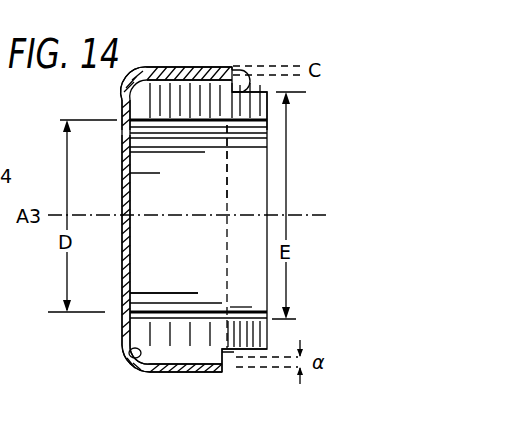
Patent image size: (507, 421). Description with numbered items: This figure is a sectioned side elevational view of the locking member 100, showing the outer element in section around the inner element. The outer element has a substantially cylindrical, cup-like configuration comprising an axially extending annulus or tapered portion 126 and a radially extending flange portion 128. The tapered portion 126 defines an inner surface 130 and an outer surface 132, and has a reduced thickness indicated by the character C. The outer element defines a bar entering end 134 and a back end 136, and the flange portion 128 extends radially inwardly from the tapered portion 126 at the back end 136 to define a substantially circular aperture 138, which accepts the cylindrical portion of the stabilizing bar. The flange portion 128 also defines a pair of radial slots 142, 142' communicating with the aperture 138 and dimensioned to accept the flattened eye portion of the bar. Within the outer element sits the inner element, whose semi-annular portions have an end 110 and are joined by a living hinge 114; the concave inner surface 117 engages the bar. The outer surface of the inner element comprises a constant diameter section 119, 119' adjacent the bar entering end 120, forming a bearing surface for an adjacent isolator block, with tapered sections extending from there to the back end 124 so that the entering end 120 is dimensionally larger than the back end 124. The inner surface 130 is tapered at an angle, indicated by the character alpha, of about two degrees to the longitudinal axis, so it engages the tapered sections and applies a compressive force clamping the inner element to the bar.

The locking member 100 is at (197, 37).
The end of first portion 110 is at (250, 112).
The living hinge 114 is at (192, 64).
The inner surface 117 is at (189, 267).
The constant diameter section 119 is at (283, 69).
The constant diameter section 119' is at (245, 373).
The bar entering end 120 is at (271, 335).
The back end 124 is at (138, 151).
The axially extending tapered portion 126 is at (143, 69).
The flange portion 128 is at (127, 362).
The inner surface 130 is at (216, 67).
The outer surface 132 is at (170, 372).
The bar entering end 134 is at (248, 88).
The back end 136 is at (118, 86).
The aperture 138 is at (122, 273).
The radial slot 142 is at (72, 113).
The radial slot 142' is at (88, 335).